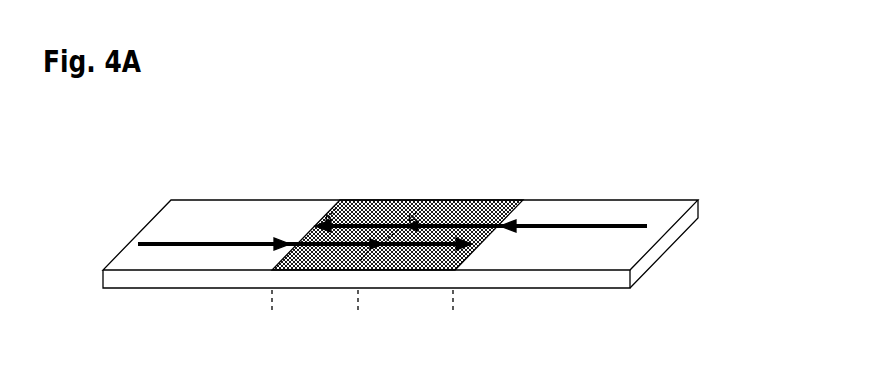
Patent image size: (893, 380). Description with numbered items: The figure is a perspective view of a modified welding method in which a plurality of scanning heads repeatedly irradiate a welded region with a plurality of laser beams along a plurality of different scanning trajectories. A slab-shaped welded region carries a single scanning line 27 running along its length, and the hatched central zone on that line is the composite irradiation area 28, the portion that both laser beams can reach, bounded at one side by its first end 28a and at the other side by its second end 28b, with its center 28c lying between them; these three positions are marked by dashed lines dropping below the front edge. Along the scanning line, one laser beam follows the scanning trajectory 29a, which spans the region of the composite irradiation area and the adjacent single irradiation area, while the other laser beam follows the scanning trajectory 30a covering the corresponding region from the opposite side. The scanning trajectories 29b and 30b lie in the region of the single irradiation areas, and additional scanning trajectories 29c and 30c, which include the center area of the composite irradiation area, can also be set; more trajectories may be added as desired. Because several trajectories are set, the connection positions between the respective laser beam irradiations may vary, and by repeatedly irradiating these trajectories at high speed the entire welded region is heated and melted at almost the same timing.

The scanning line 27 is at (658, 188).
The composite irradiation area 28 is at (322, 209).
The first end of composite irradiation area 28a is at (282, 315).
The second end of composite irradiation area 28b is at (465, 315).
The center of composite irradiation area 28c is at (359, 315).
The scanning trajectory 29a is at (270, 253).
The scanning trajectory 29b is at (455, 253).
The additional scanning trajectory 29c is at (367, 253).
The scanning trajectory 30a is at (337, 200).
The scanning trajectory 30b is at (512, 213).
The additional scanning trajectory 30c is at (420, 210).